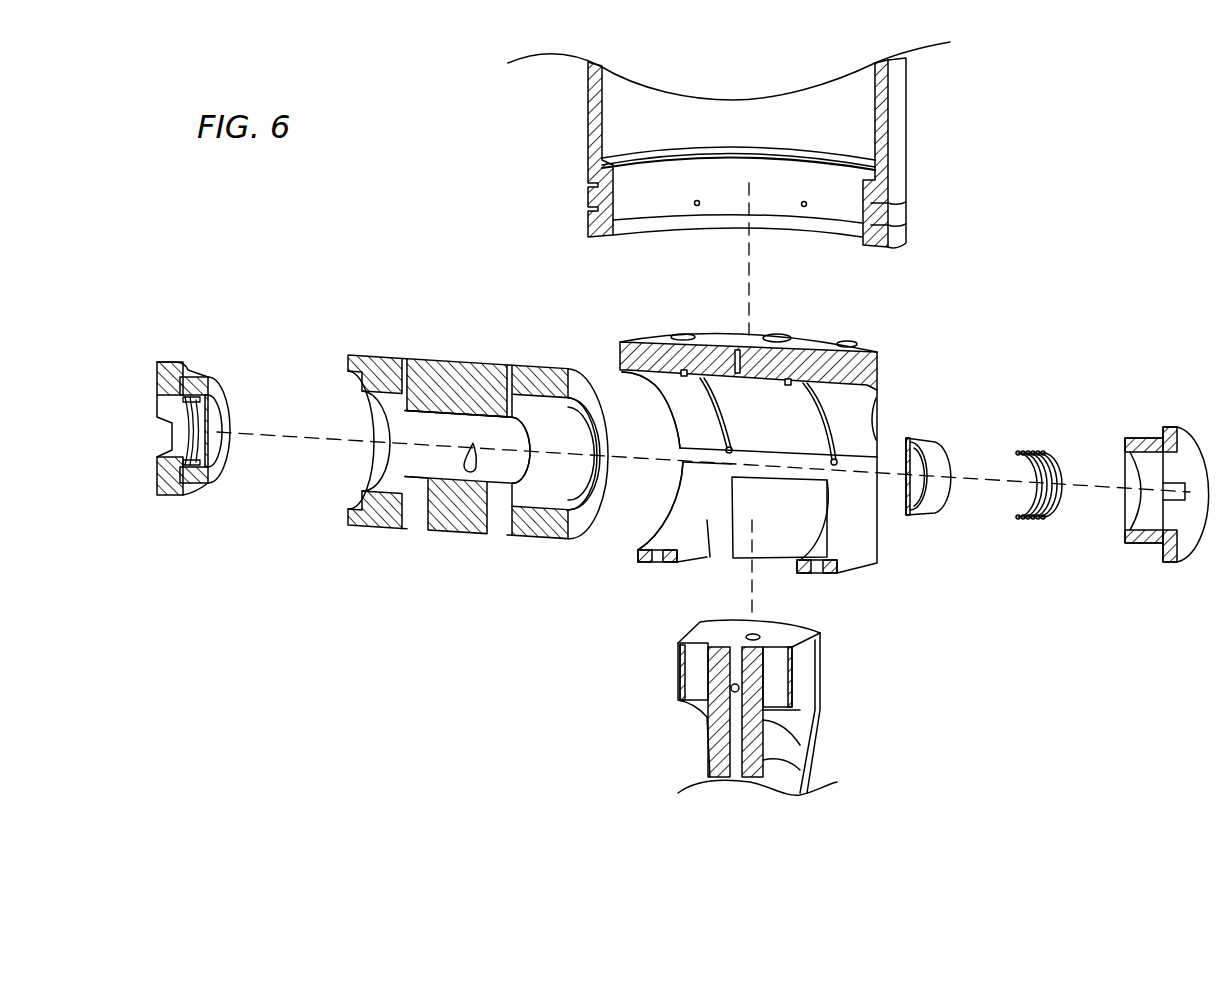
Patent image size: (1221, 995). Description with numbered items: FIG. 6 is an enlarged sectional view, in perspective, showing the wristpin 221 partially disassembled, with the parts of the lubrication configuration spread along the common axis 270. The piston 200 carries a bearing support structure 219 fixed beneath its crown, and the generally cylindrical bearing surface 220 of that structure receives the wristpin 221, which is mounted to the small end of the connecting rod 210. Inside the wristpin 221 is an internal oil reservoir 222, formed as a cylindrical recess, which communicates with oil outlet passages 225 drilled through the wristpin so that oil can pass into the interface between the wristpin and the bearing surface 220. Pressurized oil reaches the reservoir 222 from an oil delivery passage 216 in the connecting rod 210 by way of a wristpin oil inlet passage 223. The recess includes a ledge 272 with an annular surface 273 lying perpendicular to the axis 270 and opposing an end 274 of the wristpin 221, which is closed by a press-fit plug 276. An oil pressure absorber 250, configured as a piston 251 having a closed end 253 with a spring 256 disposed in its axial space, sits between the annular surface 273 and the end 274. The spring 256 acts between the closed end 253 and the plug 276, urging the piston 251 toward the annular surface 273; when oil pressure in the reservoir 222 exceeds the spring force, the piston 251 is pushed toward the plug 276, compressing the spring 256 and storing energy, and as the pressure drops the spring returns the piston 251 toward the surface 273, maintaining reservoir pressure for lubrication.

The piston 200 is at (970, 158).
The connecting rod 210 is at (842, 670).
The oil delivery passage 216 is at (735, 660).
The bearing support structure 219 is at (860, 332).
The bearing surface 220 is at (702, 428).
The wristpin 221 is at (445, 347).
The oil reservoir 222 is at (422, 455).
The wristpin oil inlet passage 223 is at (462, 460).
The oil outlet passages 225 is at (374, 356).
The oil pressure absorber 250 is at (217, 447).
The piston 251 is at (925, 438).
The closed end 253 is at (915, 492).
The spring 256 is at (1041, 450).
The axis 270 is at (647, 462).
The ledge 272 is at (531, 402).
The annular surface 273 is at (532, 433).
The end of the wristpin 274 is at (565, 563).
The press-fit plug 276 is at (183, 497).